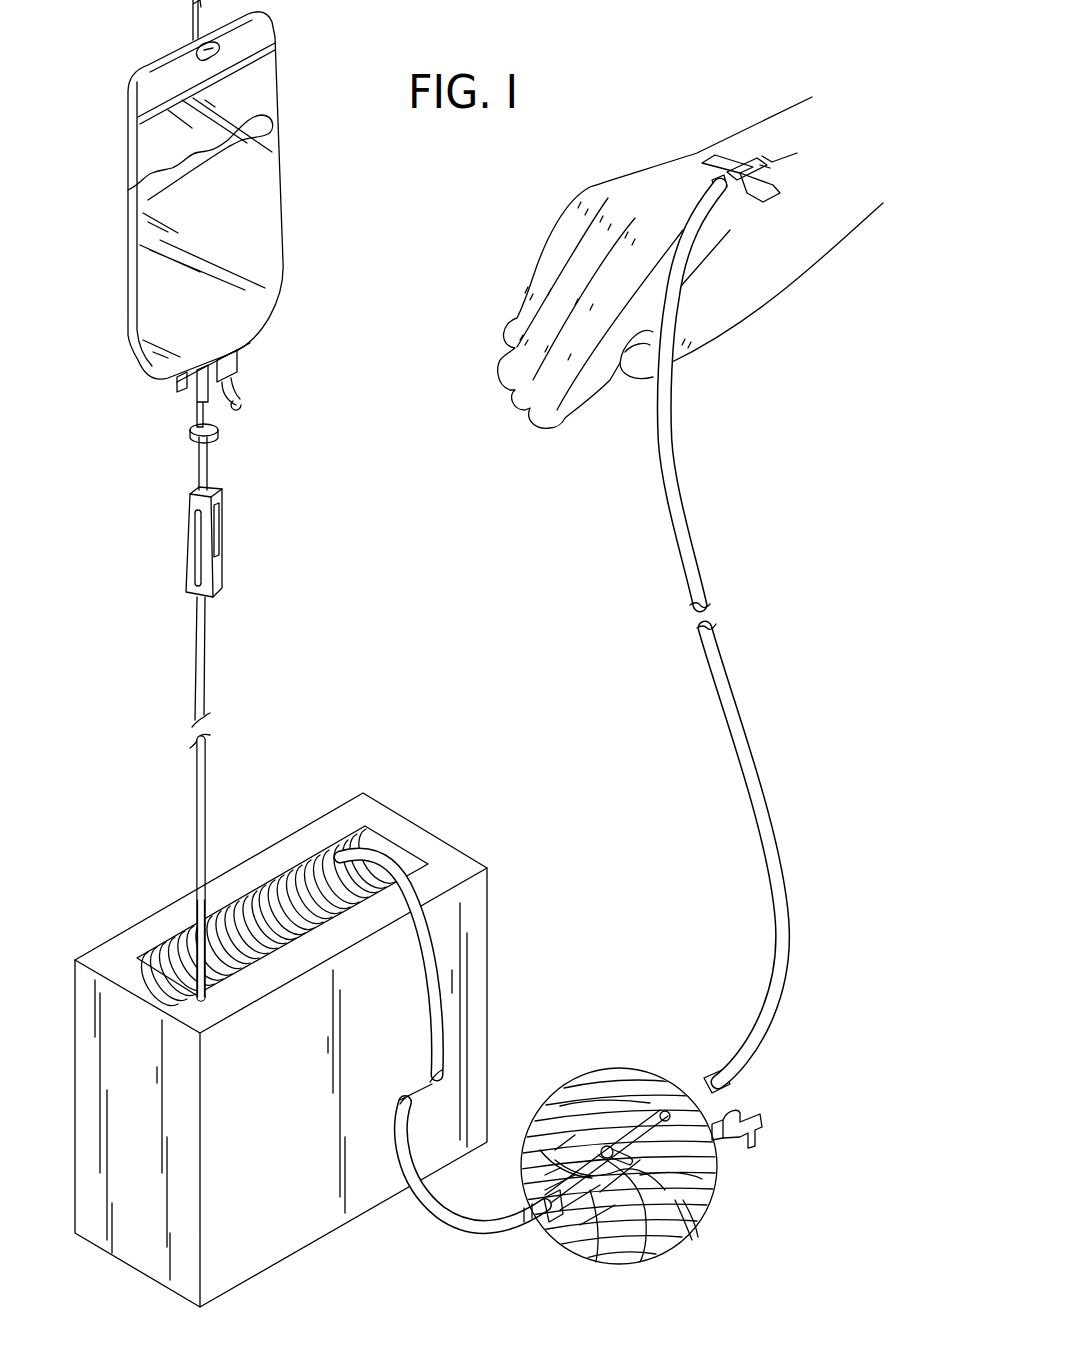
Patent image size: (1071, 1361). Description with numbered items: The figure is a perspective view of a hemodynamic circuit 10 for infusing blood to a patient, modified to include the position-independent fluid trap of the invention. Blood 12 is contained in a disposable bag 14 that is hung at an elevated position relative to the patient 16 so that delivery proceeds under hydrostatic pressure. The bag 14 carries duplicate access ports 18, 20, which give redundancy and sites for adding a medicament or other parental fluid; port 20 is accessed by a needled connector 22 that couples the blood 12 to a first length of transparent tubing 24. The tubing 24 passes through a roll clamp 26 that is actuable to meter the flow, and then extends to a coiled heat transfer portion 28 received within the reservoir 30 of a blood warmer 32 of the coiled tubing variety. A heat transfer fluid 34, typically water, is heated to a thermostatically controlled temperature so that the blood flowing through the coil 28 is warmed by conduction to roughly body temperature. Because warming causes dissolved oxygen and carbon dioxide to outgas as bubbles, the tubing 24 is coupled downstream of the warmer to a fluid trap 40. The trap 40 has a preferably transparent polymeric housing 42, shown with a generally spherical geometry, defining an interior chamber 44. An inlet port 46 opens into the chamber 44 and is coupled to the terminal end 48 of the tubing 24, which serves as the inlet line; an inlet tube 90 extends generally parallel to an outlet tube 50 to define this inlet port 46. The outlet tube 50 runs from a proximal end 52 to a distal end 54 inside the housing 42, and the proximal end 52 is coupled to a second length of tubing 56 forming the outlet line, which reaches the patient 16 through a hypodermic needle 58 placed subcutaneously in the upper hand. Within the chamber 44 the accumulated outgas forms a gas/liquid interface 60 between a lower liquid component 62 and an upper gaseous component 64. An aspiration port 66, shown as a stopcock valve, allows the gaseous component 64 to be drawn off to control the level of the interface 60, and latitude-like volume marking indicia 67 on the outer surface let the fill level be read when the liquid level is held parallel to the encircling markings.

The hemodynamic circuit 10 is at (378, 230).
The blood 12 is at (195, 222).
The disposable bag 14 is at (280, 72).
The patient 16 is at (645, 180).
The access port 18 is at (237, 382).
The access port 20 is at (200, 400).
The needled connector 22 is at (216, 428).
The first length of transparent tubing 24 is at (206, 635).
The roll clamp 26 is at (224, 538).
The coiled heat transfer portion 28 is at (293, 888).
The reservoir 30 is at (385, 843).
The blood warmer 32 is at (488, 895).
The heat transfer fluid 34 is at (173, 943).
The fluid trap 40 is at (648, 1000).
The housing 42 is at (587, 1072).
The interior chamber 44 is at (545, 1160).
The inlet port 46 is at (700, 1178).
The terminal end 48 is at (562, 1233).
The outlet tube 50 is at (657, 1108).
The proximal end 52 is at (715, 1082).
The distal end 54 is at (583, 1130).
The second length of tubing 56 is at (734, 718).
The hypodermic needle 58 is at (770, 157).
The gas/liquid interface 60 is at (640, 1250).
The liquid fluid component 62 is at (605, 1220).
The gaseous fluid component 64 is at (620, 1075).
The aspiration port 66 is at (745, 1112).
The volume marking indicia 67 is at (690, 1226).
The inlet tube 90 is at (560, 1160).